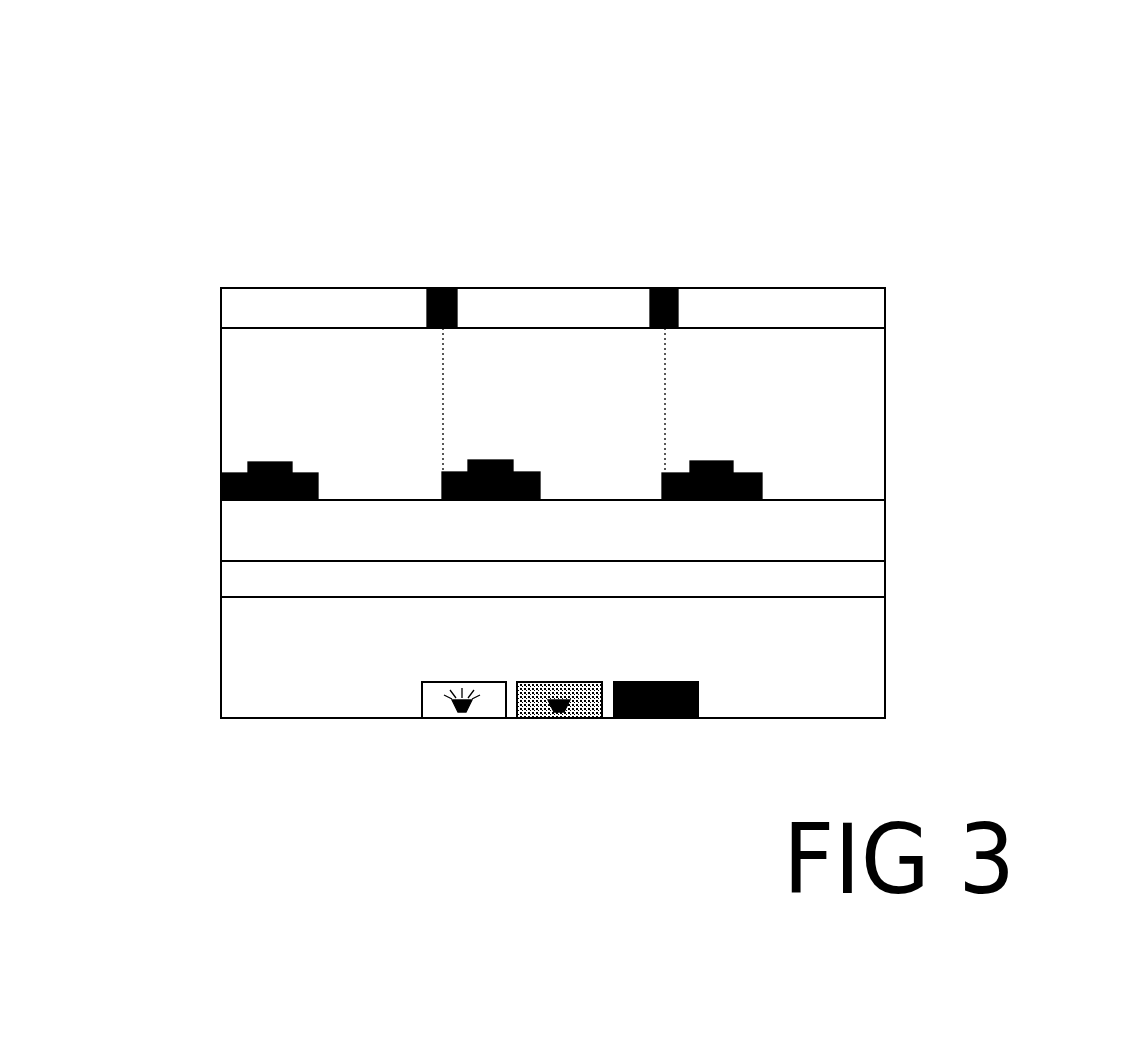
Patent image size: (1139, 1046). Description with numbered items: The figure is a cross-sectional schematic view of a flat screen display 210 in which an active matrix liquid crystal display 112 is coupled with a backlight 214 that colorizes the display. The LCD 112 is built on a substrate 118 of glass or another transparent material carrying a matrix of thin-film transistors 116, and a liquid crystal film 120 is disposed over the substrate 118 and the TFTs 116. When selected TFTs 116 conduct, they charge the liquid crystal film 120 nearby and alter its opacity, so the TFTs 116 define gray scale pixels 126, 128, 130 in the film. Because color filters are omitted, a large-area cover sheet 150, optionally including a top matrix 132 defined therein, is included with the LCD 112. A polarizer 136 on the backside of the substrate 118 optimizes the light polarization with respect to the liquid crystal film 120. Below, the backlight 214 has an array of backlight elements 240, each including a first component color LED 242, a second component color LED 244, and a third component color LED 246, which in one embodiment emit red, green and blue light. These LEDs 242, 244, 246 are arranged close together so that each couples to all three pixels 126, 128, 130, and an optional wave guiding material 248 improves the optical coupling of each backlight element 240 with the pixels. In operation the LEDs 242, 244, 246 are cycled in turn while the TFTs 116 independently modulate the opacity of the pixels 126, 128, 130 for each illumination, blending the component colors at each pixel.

The display 210 is at (958, 244).
The active matrix liquid crystal display 112 is at (209, 288).
The backlight 214 is at (209, 598).
The cover sheet 150 is at (881, 305).
The top matrix 132 is at (442, 288).
The liquid crystal film 120 is at (887, 427).
The pixel 126 is at (352, 407).
The pixel 128 is at (566, 407).
The pixel 130 is at (783, 405).
The thin-film transistor 116 is at (300, 472).
The substrate 118 is at (867, 527).
The polarizer 136 is at (874, 575).
The wave guiding material 248 is at (876, 665).
The backlight element 240 is at (590, 732).
The first component color light emitting diode 242 is at (441, 682).
The second component color light emitting diode 244 is at (565, 682).
The third component color light emitting diode 246 is at (692, 666).